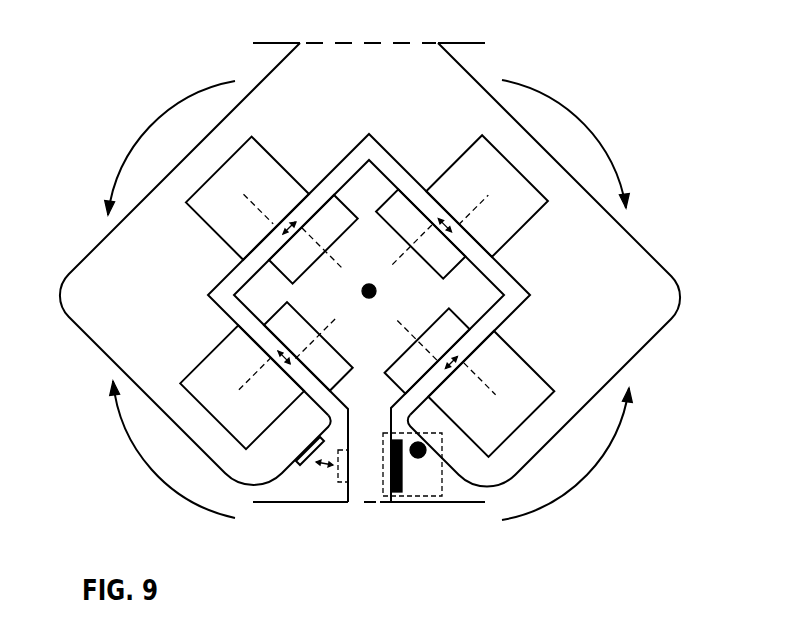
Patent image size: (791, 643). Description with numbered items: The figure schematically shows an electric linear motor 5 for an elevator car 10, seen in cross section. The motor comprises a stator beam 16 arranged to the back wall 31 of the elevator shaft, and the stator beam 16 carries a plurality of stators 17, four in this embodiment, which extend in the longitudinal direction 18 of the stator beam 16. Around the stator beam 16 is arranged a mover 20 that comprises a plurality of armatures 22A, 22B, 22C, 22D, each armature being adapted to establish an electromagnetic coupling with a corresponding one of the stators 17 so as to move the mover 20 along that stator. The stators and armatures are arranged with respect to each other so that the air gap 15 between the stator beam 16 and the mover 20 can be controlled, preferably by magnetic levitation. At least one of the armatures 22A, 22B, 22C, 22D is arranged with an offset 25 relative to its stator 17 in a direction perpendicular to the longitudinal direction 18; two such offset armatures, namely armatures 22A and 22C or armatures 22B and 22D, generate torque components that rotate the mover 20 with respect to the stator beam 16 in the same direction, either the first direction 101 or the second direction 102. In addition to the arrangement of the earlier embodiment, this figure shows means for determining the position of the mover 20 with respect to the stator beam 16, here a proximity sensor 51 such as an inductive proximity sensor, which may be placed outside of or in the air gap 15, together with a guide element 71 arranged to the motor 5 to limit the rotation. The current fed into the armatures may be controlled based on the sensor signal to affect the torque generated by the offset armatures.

The electric linear motor 5 is at (74, 65).
The elevator car 10 is at (384, 33).
The air gap 15 is at (258, 256).
The stator beam 16 is at (391, 361).
The stators 17 is at (307, 260).
The longitudinal direction 18 is at (369, 283).
The mover 20 is at (92, 251).
The armature 22A is at (283, 165).
The armature 22B is at (202, 352).
The armature 22C is at (530, 365).
The armature 22D is at (530, 220).
The offset 25 is at (287, 222).
The back wall 31 is at (384, 547).
The proximity sensor 51 is at (316, 484).
The guide element 71 is at (422, 498).
The first direction 101 is at (593, 127).
The second direction 102 is at (130, 157).